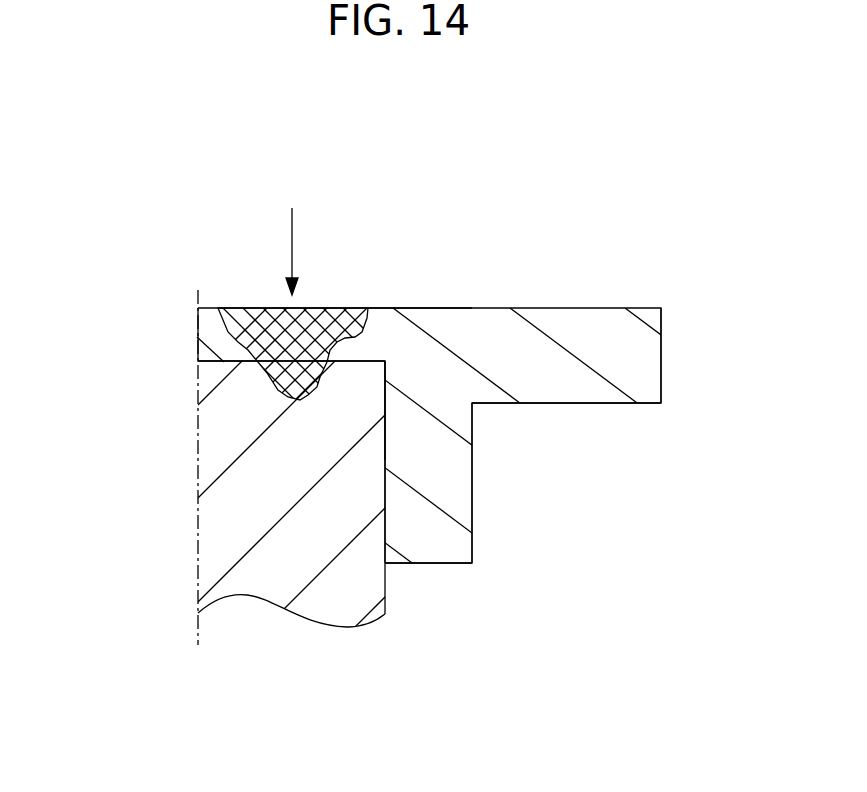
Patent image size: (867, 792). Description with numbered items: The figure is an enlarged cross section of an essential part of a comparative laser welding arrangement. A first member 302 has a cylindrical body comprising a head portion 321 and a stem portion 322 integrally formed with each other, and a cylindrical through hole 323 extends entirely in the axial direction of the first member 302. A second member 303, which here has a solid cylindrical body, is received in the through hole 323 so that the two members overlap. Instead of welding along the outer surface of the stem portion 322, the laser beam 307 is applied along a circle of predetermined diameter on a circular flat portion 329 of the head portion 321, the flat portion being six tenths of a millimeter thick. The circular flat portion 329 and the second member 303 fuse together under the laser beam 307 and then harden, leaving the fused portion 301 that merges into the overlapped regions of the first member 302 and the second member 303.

The fused portion 301 is at (320, 323).
The first member 302 is at (557, 405).
The second member 303 is at (240, 513).
The laser beam 307 is at (291, 247).
The head portion 321 is at (605, 350).
The stem portion 322 is at (433, 535).
The through hole 323 is at (385, 453).
The circular flat portion 329 is at (386, 308).